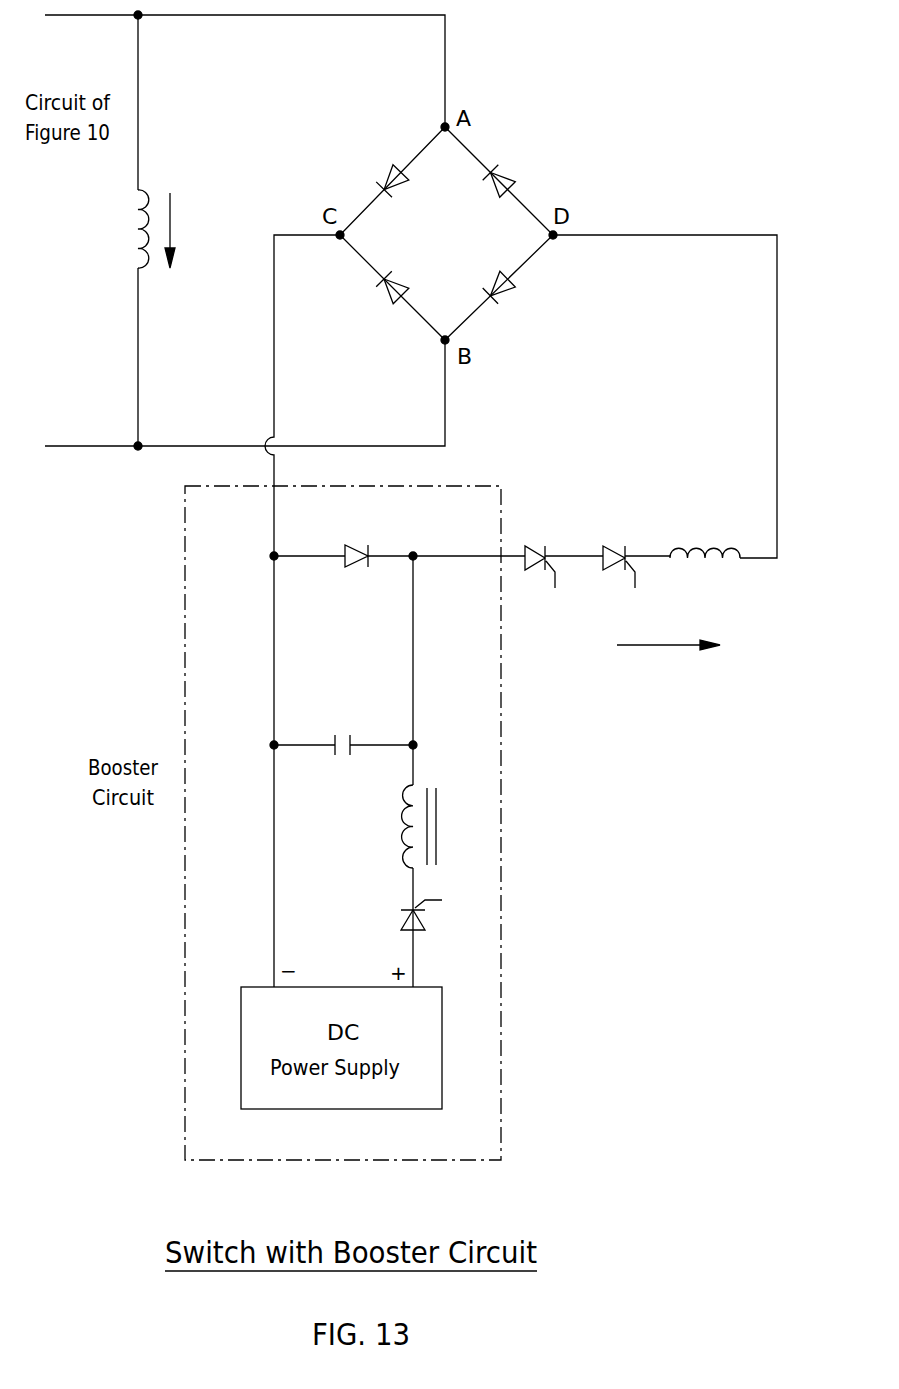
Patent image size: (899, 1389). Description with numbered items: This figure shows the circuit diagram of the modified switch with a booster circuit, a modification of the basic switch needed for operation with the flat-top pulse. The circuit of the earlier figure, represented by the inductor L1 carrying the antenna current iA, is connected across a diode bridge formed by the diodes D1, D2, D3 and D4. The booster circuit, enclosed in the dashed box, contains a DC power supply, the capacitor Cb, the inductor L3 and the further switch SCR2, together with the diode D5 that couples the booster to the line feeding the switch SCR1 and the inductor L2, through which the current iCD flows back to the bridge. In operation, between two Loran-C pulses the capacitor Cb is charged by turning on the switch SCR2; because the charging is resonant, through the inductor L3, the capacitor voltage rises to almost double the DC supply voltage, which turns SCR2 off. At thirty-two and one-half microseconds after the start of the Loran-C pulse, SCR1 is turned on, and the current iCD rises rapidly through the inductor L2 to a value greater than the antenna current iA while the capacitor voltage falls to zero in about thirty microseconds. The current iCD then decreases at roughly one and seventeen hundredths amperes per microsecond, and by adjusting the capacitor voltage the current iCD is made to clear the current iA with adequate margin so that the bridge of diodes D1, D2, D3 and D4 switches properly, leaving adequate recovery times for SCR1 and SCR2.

The inductor L1 is at (117, 229).
The antenna current iA is at (186, 230).
The bridge diode D1 is at (383, 170).
The bridge diode D2 is at (512, 170).
The bridge diode D3 is at (513, 297).
The bridge diode D4 is at (380, 298).
The diode D5 is at (354, 540).
The switch SCR1 is at (580, 550).
The inductor L2 is at (705, 535).
The current i_CD iCD is at (668, 627).
The capacitor C_b Cb is at (346, 746).
The inductor L3 is at (437, 826).
The switch SCR2 is at (445, 917).